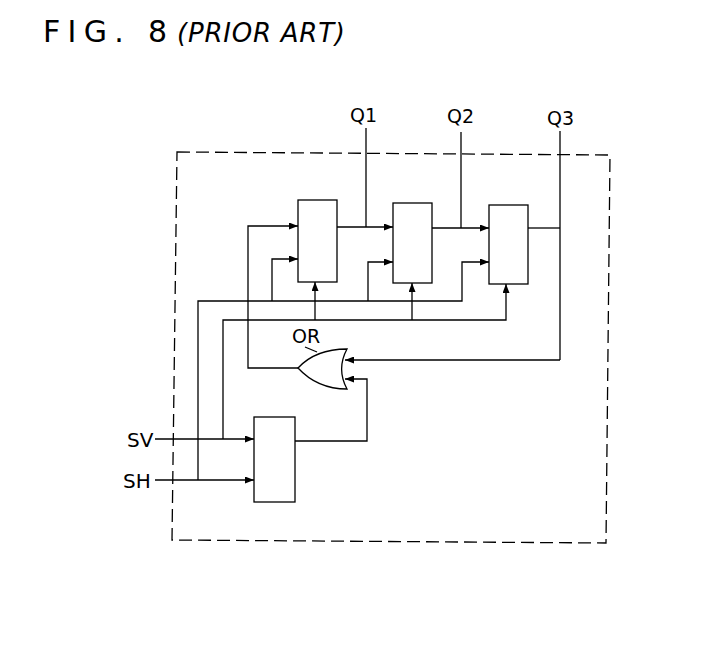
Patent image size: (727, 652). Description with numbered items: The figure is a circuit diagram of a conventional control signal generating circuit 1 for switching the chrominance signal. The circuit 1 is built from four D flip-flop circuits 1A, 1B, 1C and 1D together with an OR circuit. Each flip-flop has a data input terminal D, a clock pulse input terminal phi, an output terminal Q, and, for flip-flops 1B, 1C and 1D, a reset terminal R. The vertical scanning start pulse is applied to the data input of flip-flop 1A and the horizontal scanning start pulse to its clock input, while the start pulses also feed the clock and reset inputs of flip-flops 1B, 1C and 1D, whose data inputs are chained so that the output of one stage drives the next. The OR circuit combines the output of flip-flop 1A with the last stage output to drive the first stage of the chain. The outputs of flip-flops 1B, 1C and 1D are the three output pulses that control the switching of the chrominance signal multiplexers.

The control signal generating circuit 1 is at (598, 529).
The D flip-flop circuit 1A is at (298, 465).
The D flip-flop circuit 1B is at (324, 199).
The D flip-flop circuit 1C is at (418, 200).
The D flip-flop circuit 1D is at (513, 203).